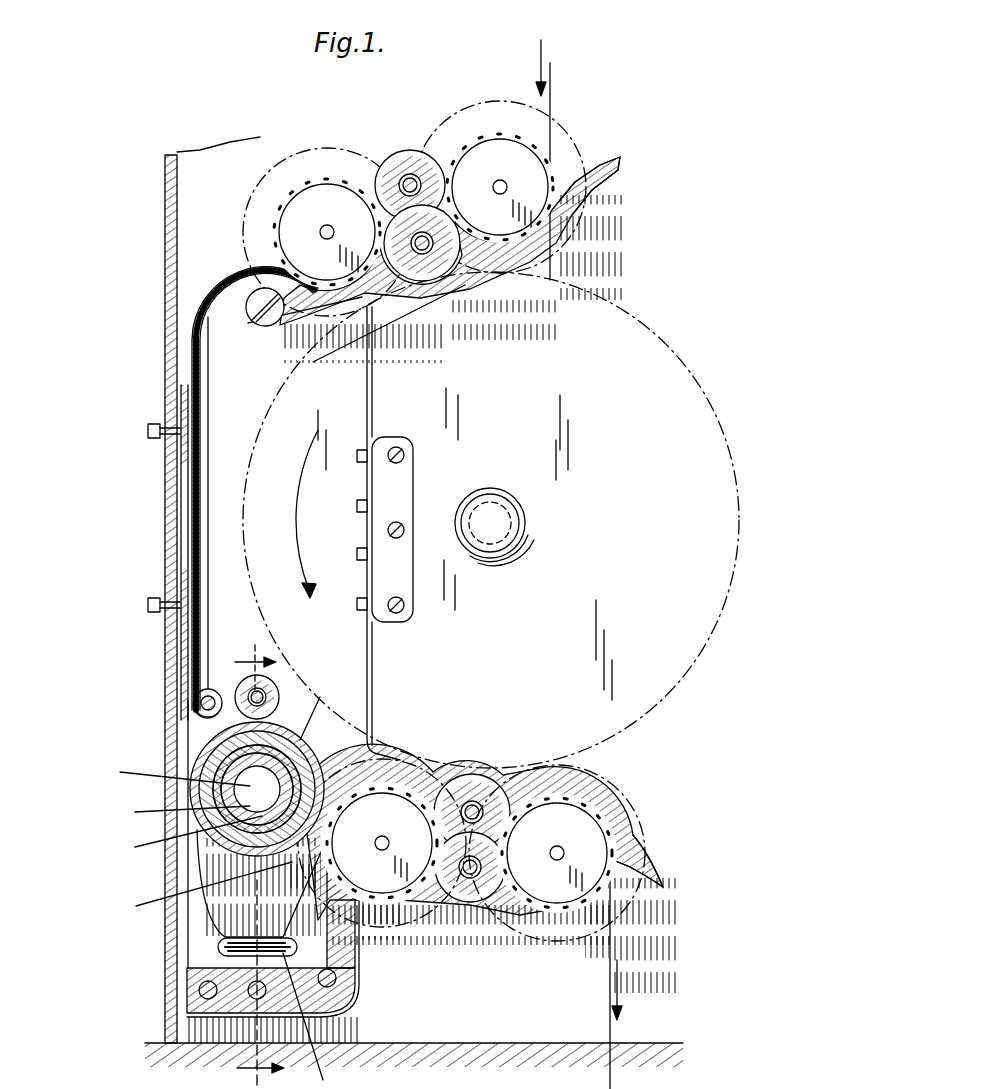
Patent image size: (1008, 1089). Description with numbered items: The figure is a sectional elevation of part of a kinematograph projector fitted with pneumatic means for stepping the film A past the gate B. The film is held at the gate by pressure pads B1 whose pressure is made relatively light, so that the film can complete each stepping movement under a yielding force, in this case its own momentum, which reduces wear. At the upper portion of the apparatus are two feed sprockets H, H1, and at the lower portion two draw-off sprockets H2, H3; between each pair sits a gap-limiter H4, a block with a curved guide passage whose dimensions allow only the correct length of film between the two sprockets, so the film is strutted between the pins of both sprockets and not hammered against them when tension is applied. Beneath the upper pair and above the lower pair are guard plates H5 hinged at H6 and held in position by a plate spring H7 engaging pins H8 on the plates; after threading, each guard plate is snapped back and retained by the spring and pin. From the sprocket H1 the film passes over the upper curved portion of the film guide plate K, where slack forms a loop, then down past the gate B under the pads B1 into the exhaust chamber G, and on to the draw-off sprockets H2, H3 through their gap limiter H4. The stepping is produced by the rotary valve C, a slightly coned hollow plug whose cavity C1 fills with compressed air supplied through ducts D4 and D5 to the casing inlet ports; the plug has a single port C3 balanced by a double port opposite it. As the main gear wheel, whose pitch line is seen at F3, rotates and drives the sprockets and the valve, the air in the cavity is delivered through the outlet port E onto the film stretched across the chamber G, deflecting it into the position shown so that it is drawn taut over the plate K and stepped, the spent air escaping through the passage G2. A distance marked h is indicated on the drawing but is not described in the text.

The film A is at (552, 108).
The gate B is at (192, 500).
The pressure pads B1 is at (186, 402).
The rotary valve C is at (300, 792).
The cavity C1 is at (176, 815).
The single port C3 is at (181, 841).
The duct D4 is at (323, 707).
The ducts D5 is at (169, 772).
The outlet port E is at (202, 894).
The main gear wheel pitch line F3 is at (720, 640).
The exhaust chamber G is at (216, 938).
The passage G2 is at (222, 950).
The feed sprocket H is at (490, 153).
The feed sprocket H1 is at (320, 196).
The draw-off sprocket H2 is at (397, 884).
The draw-off sprocket H3 is at (560, 882).
The gap-limiter H4 is at (397, 196).
The guard plates H5 is at (598, 182).
The hinge H6 is at (244, 320).
The plate spring H7 is at (374, 380).
The pins H8 is at (400, 302).
The film guide plate K is at (218, 272).
The adjustment distance h is at (259, 852).